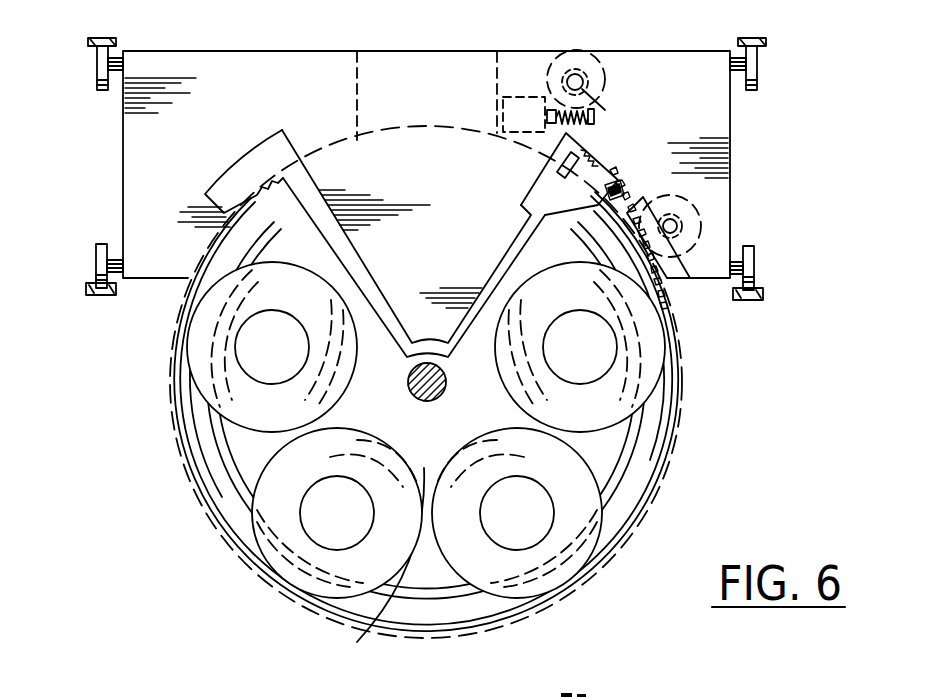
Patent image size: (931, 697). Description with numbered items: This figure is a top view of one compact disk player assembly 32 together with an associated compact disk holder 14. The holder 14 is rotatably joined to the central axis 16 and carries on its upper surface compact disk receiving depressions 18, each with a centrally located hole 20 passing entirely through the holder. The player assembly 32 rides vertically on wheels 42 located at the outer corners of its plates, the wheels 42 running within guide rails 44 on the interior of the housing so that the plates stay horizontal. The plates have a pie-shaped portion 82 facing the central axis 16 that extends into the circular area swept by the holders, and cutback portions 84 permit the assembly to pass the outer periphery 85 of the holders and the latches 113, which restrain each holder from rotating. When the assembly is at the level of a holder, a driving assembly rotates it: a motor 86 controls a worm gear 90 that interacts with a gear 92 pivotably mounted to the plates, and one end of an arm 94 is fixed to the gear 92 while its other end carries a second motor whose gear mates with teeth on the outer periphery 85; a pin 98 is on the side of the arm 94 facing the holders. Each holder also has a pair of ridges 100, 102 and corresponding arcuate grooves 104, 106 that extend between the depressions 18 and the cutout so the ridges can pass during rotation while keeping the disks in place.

The compact disk holder 14 is at (688, 456).
The central axis 16 is at (410, 393).
The compact disk receiving depression 18 is at (618, 400).
The centrally located hole 20 is at (612, 368).
The compact disk player assembly 32 is at (291, 49).
The wheel 42 is at (96, 68).
The guide rail 44 is at (102, 38).
The pie-shaped portion 82 is at (456, 250).
The cutback portion 84 is at (250, 165).
The outer periphery 85 is at (537, 70).
The motor 86 is at (500, 110).
The worm gear 90 is at (600, 153).
The gear 92 is at (571, 60).
The arm 94 is at (653, 155).
The pin 98 is at (625, 166).
The ridge 100 is at (347, 462).
The ridge 102 is at (256, 570).
The arcuate groove 104 is at (378, 570).
The arcuate groove 106 is at (643, 488).
The latch 113 is at (612, 152).